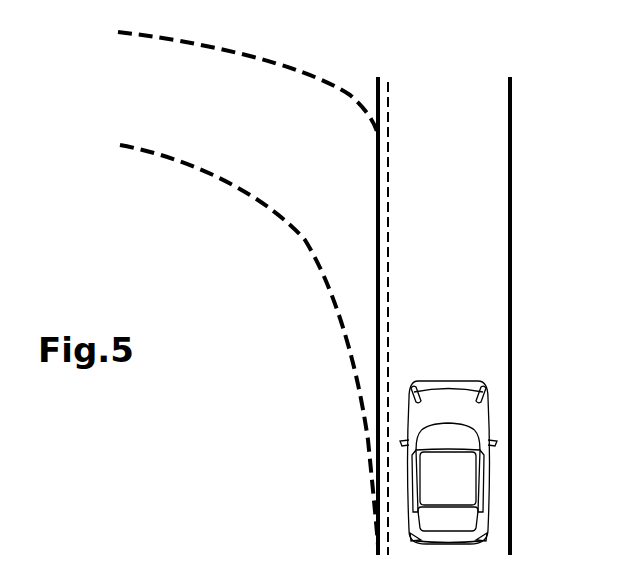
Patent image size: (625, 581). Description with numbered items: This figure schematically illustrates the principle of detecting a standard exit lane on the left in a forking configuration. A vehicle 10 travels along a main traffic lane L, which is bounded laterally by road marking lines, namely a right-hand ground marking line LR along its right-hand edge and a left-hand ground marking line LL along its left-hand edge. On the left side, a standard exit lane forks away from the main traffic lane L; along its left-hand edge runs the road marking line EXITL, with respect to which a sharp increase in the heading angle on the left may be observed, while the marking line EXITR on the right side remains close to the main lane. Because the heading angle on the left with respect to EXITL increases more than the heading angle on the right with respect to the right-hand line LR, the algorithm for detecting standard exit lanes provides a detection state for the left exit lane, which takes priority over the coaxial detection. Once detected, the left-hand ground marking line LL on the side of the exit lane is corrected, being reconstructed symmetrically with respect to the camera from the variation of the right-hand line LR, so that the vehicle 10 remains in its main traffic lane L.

The vehicle 10 is at (458, 473).
The main traffic lane L is at (473, 241).
The left-hand ground marking line LL is at (378, 362).
The right-hand ground marking line LR is at (510, 325).
The road marking line on the right EXITR is at (171, 40).
The road marking line on the left of the exit lane EXITL is at (366, 465).